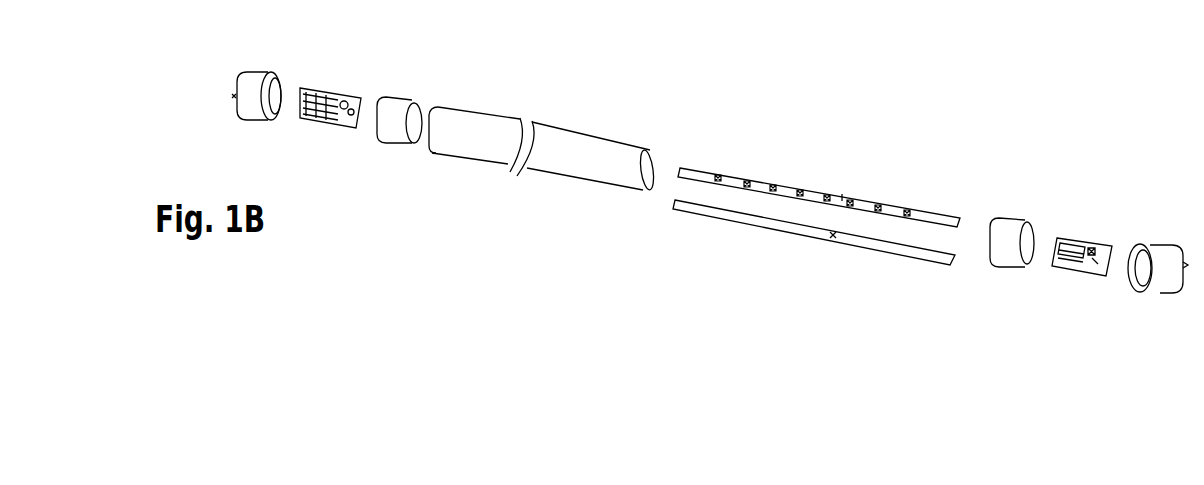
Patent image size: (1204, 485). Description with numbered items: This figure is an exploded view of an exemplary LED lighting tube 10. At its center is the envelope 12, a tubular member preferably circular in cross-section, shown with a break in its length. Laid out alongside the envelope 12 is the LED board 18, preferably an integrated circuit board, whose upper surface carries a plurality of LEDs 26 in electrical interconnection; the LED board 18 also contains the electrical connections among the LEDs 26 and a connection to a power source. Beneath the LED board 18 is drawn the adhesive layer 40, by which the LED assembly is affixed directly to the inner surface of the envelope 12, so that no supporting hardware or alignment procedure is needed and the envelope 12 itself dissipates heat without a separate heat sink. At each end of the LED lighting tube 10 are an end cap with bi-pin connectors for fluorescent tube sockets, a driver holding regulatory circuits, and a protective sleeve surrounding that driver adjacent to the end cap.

The LED lighting tube 10 is at (597, 90).
The envelope 12 is at (481, 126).
The LED board 18 is at (694, 172).
The LEDs 26 is at (801, 190).
The adhesive layer 40 is at (685, 212).